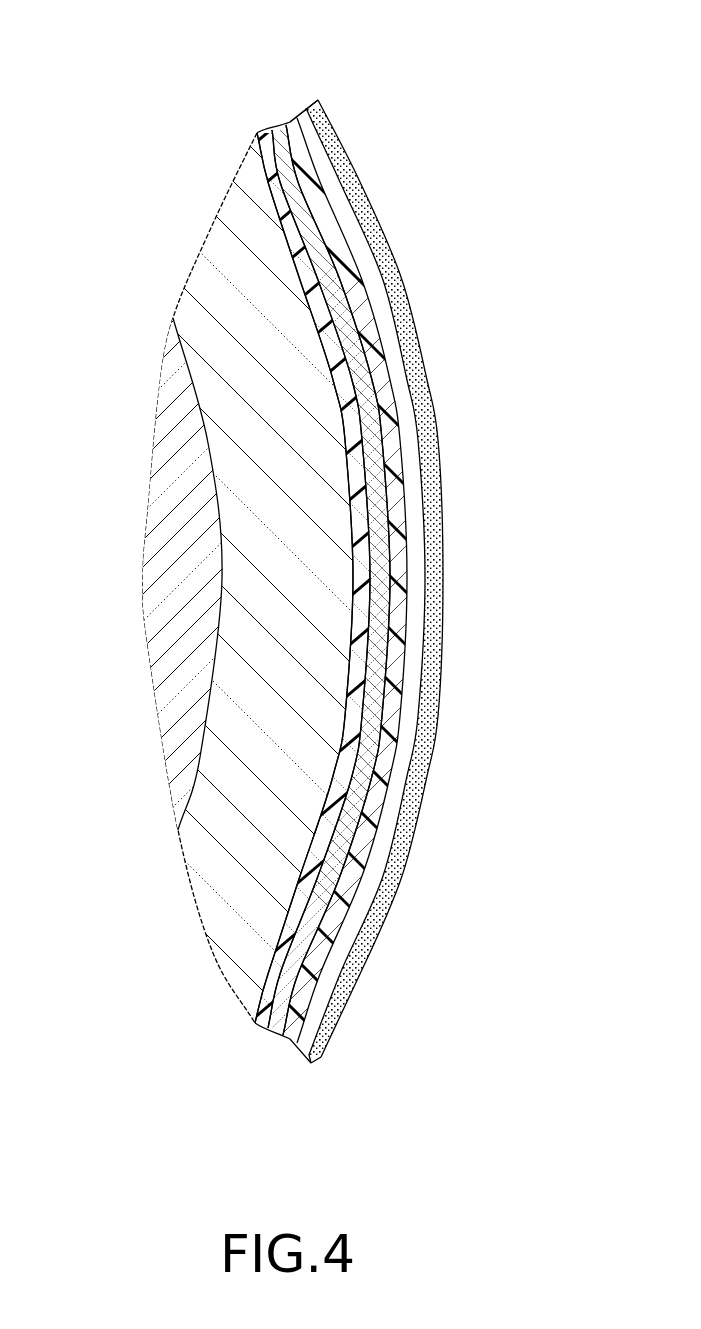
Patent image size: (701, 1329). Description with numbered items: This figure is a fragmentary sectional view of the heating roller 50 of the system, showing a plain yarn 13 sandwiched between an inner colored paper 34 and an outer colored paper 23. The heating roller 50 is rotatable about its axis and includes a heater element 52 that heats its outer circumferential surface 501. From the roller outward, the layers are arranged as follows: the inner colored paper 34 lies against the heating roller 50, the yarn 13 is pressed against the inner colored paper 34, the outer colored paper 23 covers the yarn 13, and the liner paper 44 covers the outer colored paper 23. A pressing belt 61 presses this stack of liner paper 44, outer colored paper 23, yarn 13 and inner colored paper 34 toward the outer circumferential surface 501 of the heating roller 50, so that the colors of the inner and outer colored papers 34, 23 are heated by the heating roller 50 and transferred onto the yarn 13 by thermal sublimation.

The heating roller 50 is at (203, 273).
The outer circumferential surface 501 is at (347, 460).
The heater element 52 is at (170, 605).
The inner colored paper 34 is at (255, 152).
The outer colored paper 23 is at (283, 125).
The liner paper 44 is at (299, 1047).
The pressing belt 61 is at (325, 127).
The yarn 13 is at (262, 1027).